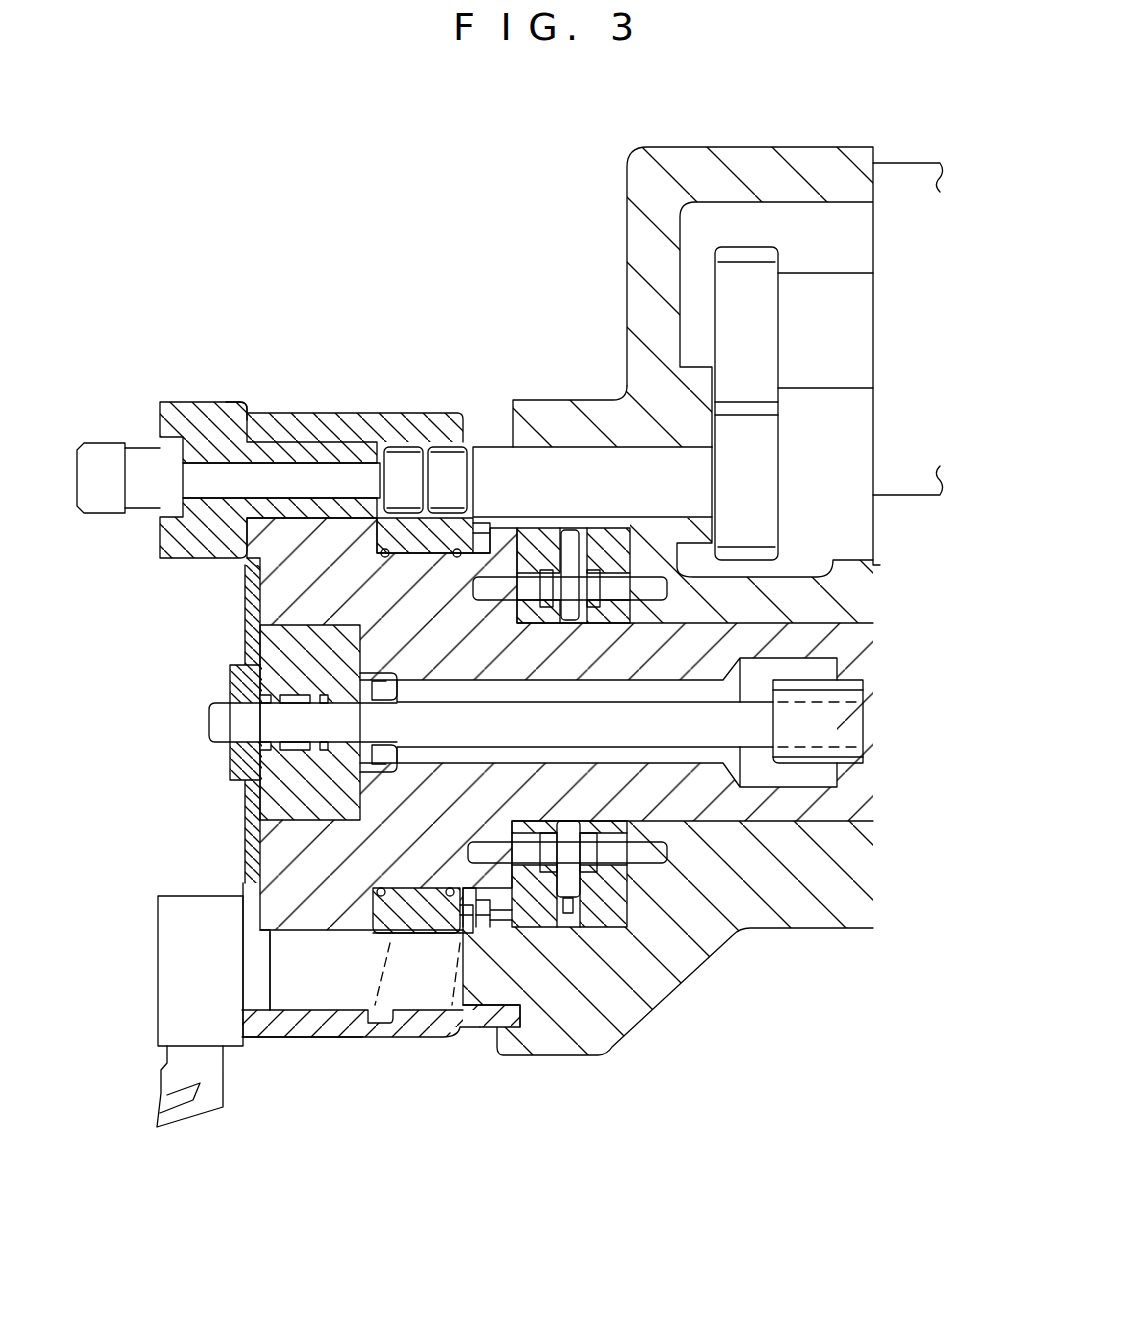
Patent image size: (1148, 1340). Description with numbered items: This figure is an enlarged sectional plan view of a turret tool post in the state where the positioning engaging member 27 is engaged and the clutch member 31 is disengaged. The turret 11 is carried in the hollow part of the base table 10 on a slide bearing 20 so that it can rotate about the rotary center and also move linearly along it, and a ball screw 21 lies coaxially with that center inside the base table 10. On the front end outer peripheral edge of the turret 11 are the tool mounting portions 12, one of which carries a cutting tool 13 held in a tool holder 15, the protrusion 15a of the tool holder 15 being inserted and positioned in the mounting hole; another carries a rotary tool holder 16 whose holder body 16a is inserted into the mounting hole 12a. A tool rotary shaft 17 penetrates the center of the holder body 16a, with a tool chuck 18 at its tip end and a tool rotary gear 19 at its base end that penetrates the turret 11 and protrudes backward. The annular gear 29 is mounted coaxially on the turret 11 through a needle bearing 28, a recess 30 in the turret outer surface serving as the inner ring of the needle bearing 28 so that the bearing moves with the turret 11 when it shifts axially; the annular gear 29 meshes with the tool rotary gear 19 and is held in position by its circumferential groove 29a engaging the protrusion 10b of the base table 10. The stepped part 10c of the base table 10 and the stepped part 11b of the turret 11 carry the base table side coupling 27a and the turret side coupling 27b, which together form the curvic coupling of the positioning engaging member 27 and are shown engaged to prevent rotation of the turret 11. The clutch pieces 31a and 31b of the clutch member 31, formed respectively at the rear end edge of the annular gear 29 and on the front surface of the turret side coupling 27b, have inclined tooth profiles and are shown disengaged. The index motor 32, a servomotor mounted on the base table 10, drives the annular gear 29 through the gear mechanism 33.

The base table 10 is at (705, 968).
The protrusion 10b is at (483, 1030).
The stepped part 10c is at (605, 530).
The turret 11 is at (306, 1042).
The stepped part 11b is at (550, 528).
The tool mounting portion 12 is at (242, 546).
The mounting hole 12a is at (287, 440).
The cutting tool 13 is at (226, 1093).
The tool holder 15 is at (166, 1010).
The protrusion 15a is at (255, 1000).
The tool holder 16 is at (205, 398).
The holder body 16a is at (228, 404).
The tool rotary shaft 17 is at (330, 475).
The tool chuck 18 is at (105, 441).
The tool rotary gear 19 is at (418, 445).
The slide bearing 20 is at (777, 818).
The ball screw 21 is at (812, 765).
The positioning engaging member 27 is at (630, 1108).
The base table side coupling 27a is at (607, 915).
The turret side coupling 27b is at (542, 915).
The needle bearing 28 is at (410, 897).
The annular gear 29 is at (423, 895).
The circumferential groove 29a is at (443, 1040).
The recess 30 is at (393, 897).
The clutch member 31 is at (520, 1130).
The clutch piece 31a is at (500, 925).
The clutch piece 31b is at (485, 925).
The index motor 32 is at (890, 148).
The gear mechanism 33 is at (715, 292).